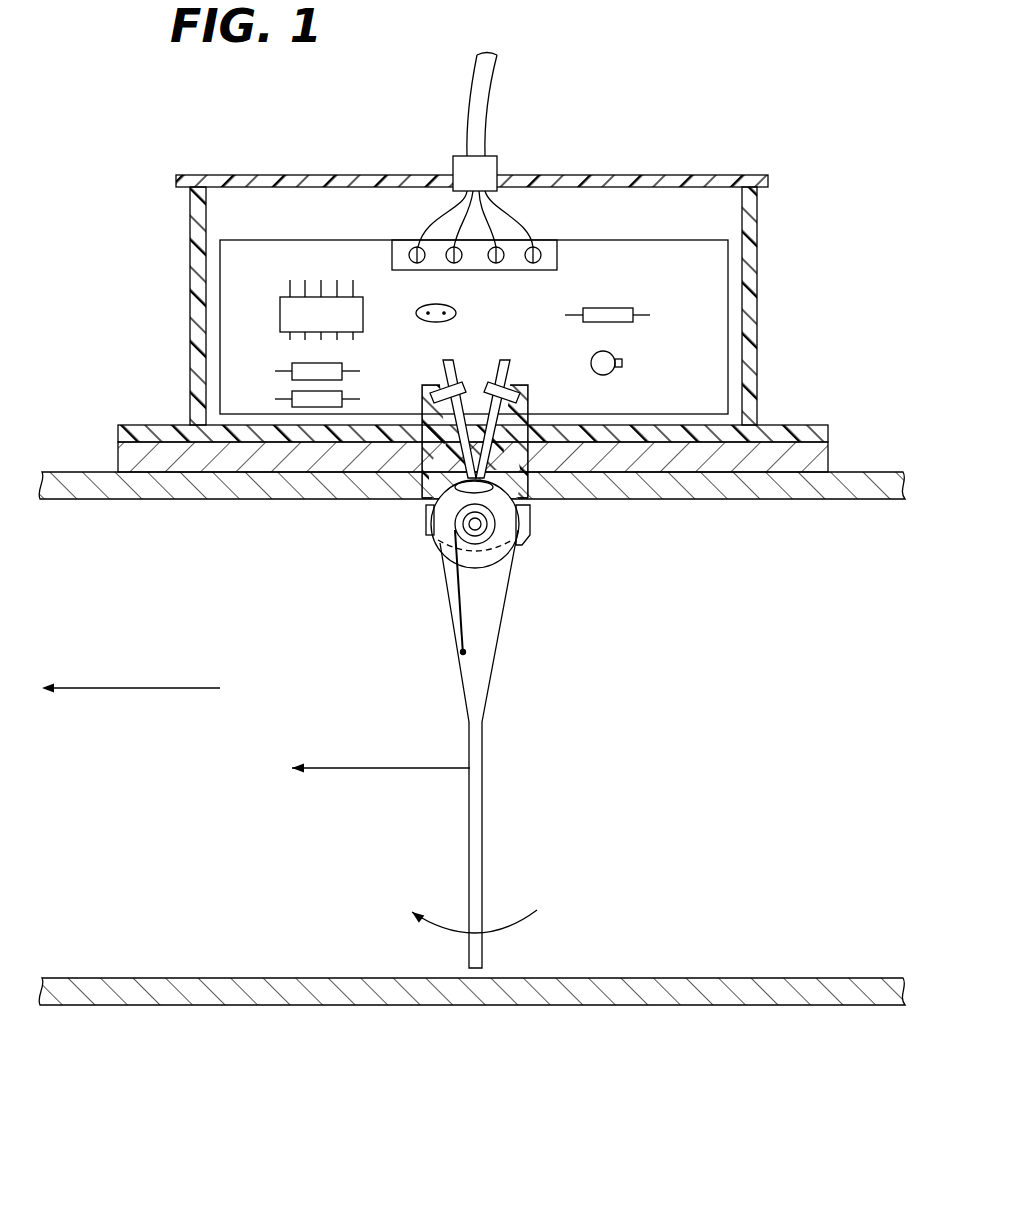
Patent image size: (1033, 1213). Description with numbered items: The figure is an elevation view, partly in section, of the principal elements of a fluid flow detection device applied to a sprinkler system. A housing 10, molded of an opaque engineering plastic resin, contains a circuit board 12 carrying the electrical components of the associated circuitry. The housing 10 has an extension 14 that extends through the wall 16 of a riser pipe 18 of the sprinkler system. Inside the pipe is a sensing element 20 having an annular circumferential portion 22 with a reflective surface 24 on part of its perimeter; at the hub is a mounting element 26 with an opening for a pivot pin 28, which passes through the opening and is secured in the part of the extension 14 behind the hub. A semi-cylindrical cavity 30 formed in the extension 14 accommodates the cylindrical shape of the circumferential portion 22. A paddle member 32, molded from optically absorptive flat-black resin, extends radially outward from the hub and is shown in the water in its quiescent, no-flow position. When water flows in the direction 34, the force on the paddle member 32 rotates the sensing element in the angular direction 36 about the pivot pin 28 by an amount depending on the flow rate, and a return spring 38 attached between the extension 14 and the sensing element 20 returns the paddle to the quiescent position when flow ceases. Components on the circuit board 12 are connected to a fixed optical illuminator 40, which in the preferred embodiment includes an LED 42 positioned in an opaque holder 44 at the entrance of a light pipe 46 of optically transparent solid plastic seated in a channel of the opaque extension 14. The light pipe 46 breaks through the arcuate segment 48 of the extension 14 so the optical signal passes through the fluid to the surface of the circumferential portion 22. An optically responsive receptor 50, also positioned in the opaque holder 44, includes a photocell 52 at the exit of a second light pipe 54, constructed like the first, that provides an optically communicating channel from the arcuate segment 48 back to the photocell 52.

The housing 10 is at (758, 300).
The circuit board 12 is at (703, 266).
The extension 14 is at (515, 453).
The wall 16 is at (850, 488).
The riser pipe 18 is at (767, 630).
The sensing element 20 is at (500, 645).
The circumferential portion 22 is at (437, 532).
The reflective surface 24 is at (433, 500).
The mounting element 26 is at (447, 527).
The pivot pin 28 is at (483, 525).
The semi-cylindrical cavity 30 is at (537, 527).
The paddle member 32 is at (482, 848).
The direction 34 is at (342, 770).
The angular direction 36 is at (530, 928).
The return spring 38 is at (457, 633).
The optical illuminator 40 is at (440, 368).
The LED 42 is at (423, 407).
The opaque holder 44 is at (423, 393).
The light pipe 46 is at (437, 445).
The arcuate segment 48 is at (532, 523).
The optically responsive receptor 50 is at (493, 360).
The photocell 52 is at (513, 398).
The second light pipe 54 is at (527, 435).